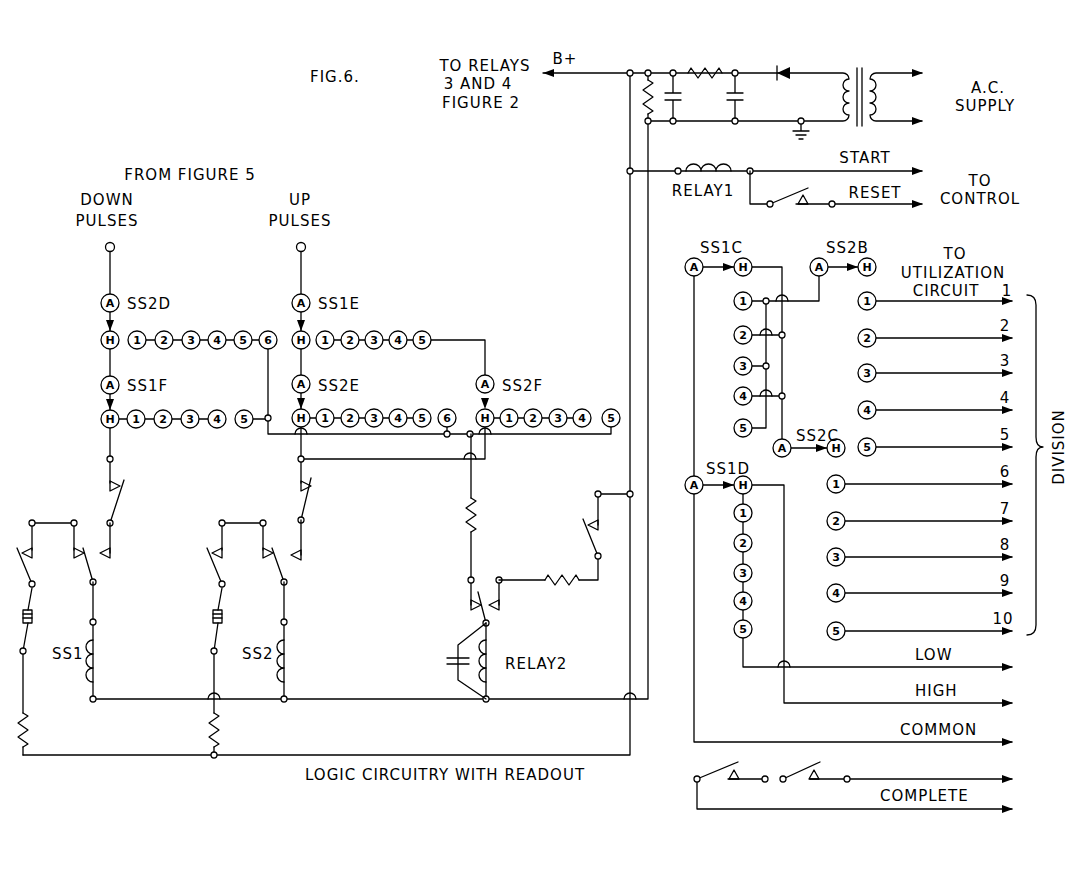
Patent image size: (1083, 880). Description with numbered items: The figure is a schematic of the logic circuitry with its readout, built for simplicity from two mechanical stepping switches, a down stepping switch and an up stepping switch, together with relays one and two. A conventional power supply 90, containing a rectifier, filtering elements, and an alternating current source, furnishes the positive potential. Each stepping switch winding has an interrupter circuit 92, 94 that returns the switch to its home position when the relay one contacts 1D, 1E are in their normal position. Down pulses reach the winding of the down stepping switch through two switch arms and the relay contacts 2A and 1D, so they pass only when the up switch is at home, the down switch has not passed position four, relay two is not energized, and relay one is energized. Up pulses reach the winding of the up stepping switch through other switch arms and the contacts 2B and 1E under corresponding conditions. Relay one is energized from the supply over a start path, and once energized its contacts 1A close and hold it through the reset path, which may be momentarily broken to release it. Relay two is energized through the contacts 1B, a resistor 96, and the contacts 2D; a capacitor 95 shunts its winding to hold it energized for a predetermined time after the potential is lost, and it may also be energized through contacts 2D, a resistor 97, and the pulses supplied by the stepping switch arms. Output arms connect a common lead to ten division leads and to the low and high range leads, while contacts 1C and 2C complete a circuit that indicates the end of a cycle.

The power supply 90 is at (735, 59).
The interrupter circuit 92 is at (25, 603).
The interrupter circuit 94 is at (215, 603).
The capacitor 95 is at (447, 662).
The resistor 96 is at (548, 570).
The resistor 97 is at (479, 506).
The contacts of relay 1 1A is at (836, 199).
The contacts of relay 1 1B is at (597, 525).
The contacts of relay 1 1C is at (731, 783).
The contacts of relay 1 1D is at (112, 558).
The contacts of relay 1 1E is at (303, 557).
The contacts of relay 2 2A is at (128, 491).
The contacts of relay 2 2B is at (317, 500).
The contacts of relay 2 2C is at (896, 783).
The contacts of relay 2 2D is at (500, 601).